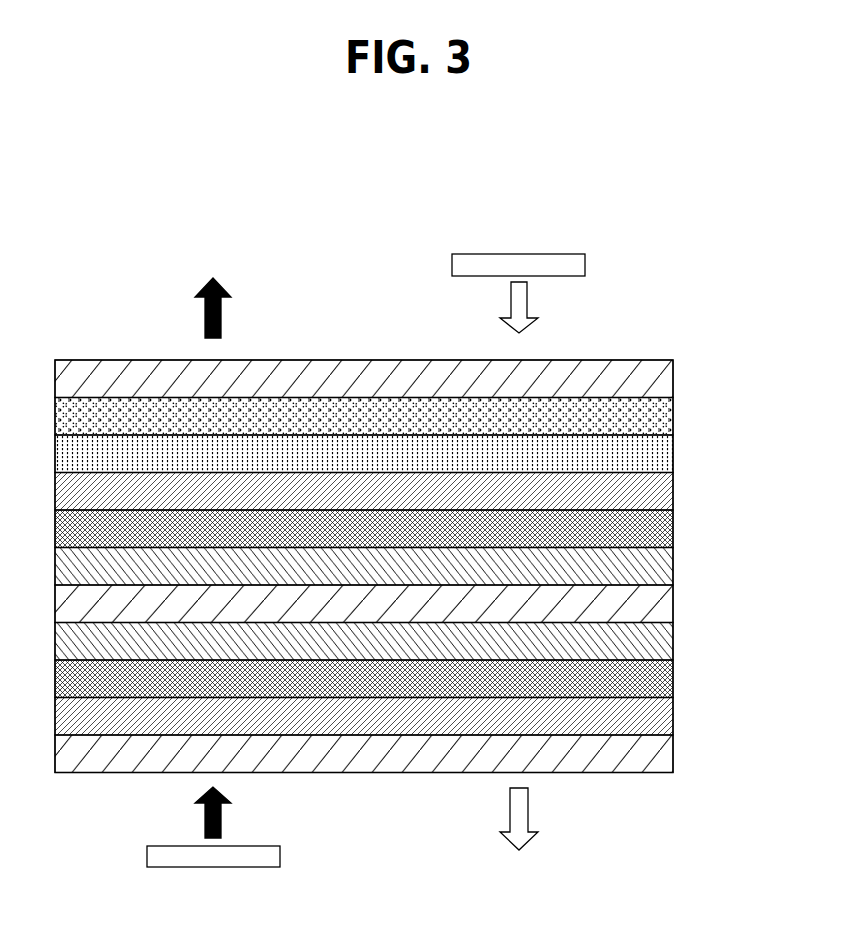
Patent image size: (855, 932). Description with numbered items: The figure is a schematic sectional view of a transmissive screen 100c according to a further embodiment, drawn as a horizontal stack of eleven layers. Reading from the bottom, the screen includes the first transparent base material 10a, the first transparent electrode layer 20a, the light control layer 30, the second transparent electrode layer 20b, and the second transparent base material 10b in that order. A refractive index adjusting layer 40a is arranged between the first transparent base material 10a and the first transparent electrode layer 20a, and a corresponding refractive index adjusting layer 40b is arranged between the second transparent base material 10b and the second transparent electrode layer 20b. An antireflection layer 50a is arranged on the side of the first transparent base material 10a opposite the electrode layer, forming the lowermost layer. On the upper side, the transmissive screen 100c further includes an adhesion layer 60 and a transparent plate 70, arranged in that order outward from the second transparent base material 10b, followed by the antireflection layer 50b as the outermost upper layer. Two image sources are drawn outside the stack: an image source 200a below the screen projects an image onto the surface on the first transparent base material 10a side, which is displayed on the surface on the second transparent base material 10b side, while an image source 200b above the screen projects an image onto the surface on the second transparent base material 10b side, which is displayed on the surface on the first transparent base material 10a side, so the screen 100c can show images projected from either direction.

The transmissive screen 100c is at (705, 273).
The antireflection layer 50b is at (675, 375).
The transparent plate 70 is at (675, 412).
The adhesion layer 60 is at (675, 450).
The second transparent base material 10b is at (675, 488).
The refractive index adjusting layer 40b is at (675, 525).
The second transparent electrode layer 20b is at (675, 562).
The light control layer 30 is at (675, 600).
The first transparent electrode layer 20a is at (675, 638).
The refractive index adjusting layer 40a is at (675, 675).
The first transparent base material 10a is at (675, 712).
The antireflection layer 50a is at (675, 748).
The image source 200b is at (450, 261).
The image source 200a is at (283, 855).